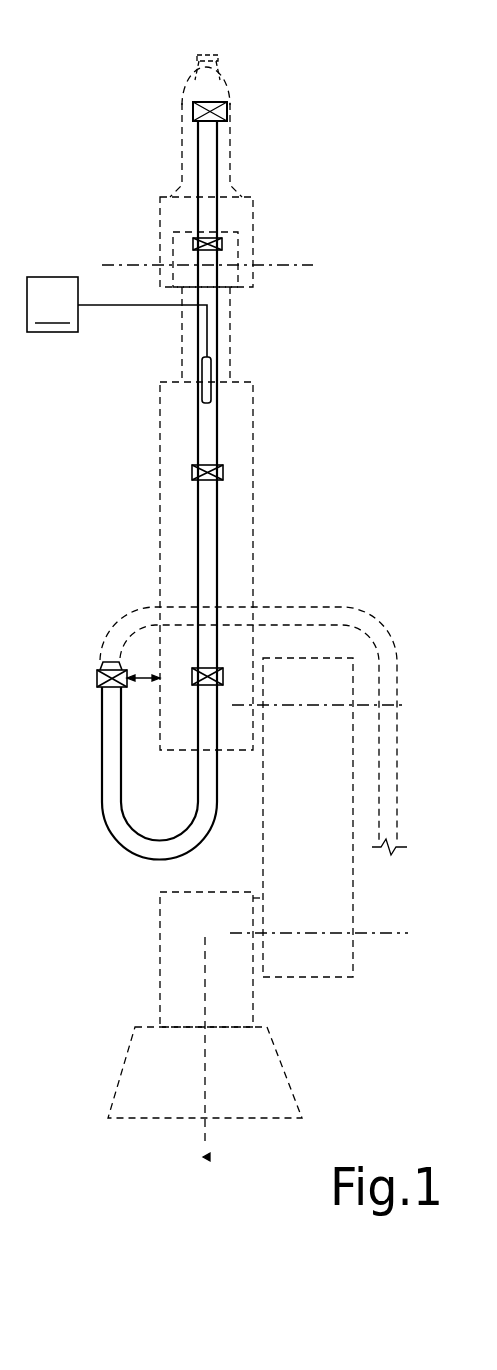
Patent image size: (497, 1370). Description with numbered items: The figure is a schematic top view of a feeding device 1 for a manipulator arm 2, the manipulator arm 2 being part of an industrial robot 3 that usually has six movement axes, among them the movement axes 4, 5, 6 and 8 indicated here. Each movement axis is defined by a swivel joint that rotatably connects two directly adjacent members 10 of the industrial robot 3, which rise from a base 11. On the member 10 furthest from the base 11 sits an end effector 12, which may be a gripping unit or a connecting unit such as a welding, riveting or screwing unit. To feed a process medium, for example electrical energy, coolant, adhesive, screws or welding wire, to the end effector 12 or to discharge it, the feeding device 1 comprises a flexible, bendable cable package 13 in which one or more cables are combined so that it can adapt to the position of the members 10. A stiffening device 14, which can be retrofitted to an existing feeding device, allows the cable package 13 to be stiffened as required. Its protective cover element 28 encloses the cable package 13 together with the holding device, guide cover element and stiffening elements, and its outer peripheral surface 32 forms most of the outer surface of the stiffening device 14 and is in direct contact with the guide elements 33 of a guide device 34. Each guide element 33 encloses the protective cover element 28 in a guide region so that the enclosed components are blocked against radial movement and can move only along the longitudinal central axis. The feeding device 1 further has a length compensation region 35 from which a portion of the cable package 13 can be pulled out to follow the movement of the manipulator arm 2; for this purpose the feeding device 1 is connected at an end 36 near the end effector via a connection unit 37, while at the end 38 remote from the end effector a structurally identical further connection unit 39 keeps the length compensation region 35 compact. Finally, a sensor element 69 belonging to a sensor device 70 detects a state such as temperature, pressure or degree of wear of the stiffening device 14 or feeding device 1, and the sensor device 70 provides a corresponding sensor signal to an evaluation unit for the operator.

The feeding device 1 is at (366, 572).
The manipulator arm 2 is at (145, 491).
The industrial robot 3 is at (336, 111).
The movement axis 4 is at (207, 1157).
The movement axis 5 is at (385, 935).
The movement axis 6 is at (328, 705).
The movement axis 8 is at (283, 267).
The member 10 is at (232, 143).
The base 11 is at (116, 1087).
The end effector 12 is at (229, 58).
The cable package 13 is at (389, 616).
The stiffening device 14 is at (232, 500).
The protective cover element 28 is at (207, 575).
The outer peripheral surface 32 is at (222, 419).
The guide element 33 is at (195, 242).
The guide device 34 is at (143, 173).
The length compensation region 35 is at (102, 847).
The end near the end effector 36 is at (151, 79).
The connection unit 37 is at (228, 110).
The end remote from the end effector 38 is at (83, 646).
The further connection unit 39 is at (97, 678).
The sensor element 69 is at (200, 373).
The sensor device 70 is at (117, 317).